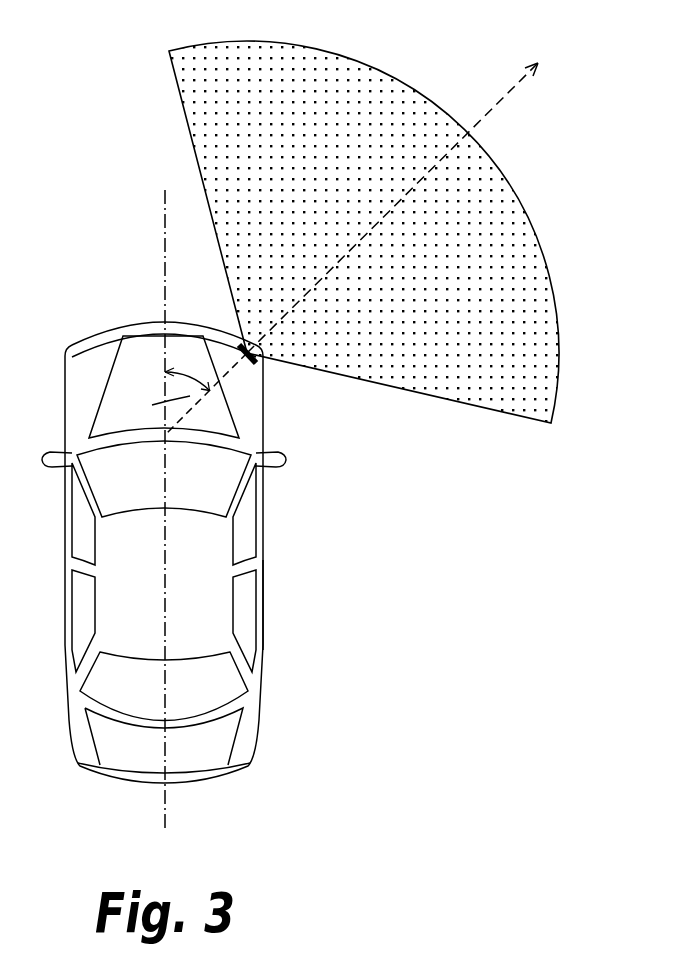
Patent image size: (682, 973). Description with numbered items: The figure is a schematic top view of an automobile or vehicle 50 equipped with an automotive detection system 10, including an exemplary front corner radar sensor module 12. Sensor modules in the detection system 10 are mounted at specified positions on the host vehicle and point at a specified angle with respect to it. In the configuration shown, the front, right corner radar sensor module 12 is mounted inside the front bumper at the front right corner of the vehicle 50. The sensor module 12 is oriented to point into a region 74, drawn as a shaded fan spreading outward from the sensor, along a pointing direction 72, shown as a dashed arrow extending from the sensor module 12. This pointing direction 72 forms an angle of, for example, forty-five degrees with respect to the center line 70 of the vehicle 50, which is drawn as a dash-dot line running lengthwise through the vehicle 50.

The detection system 10 is at (288, 420).
The front corner radar sensor module 12 is at (260, 368).
The vehicle 50 is at (263, 608).
The center line 70 is at (166, 805).
The pointing direction 72 is at (498, 105).
The region 74 is at (468, 302).